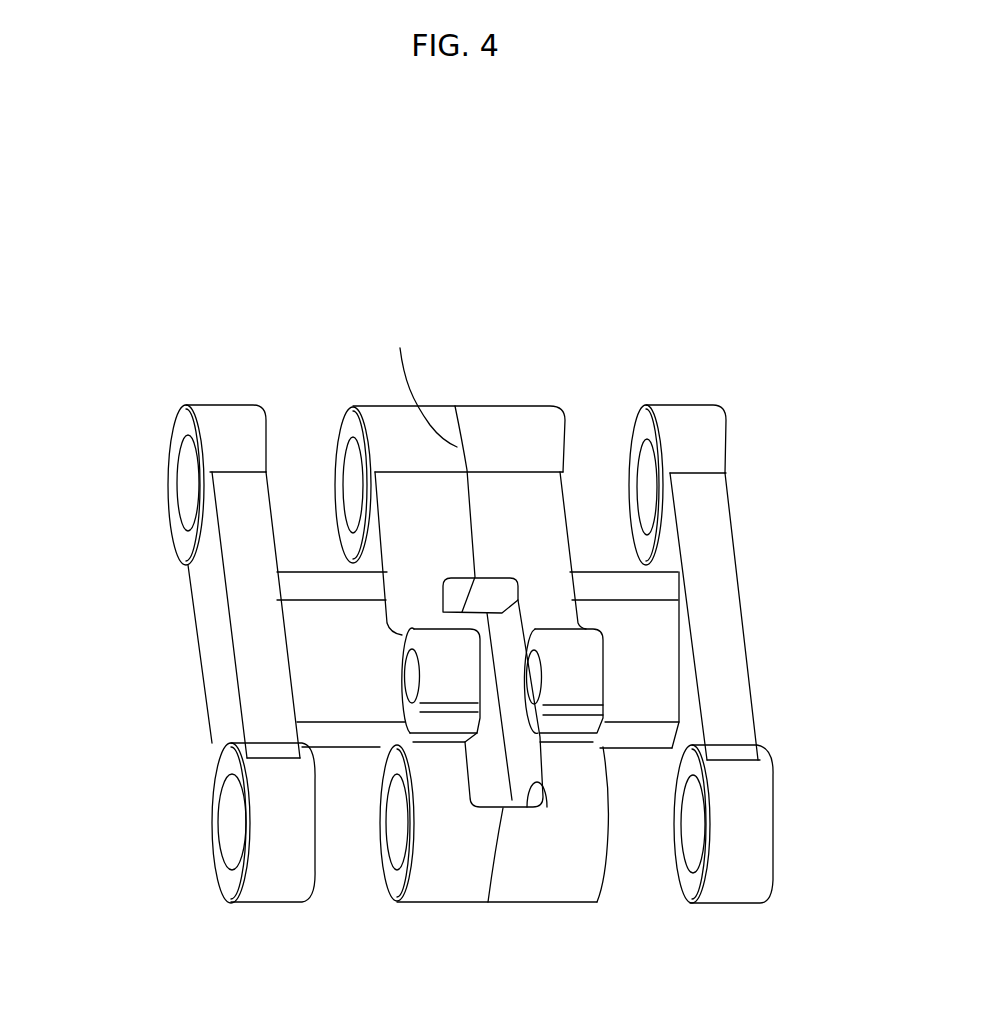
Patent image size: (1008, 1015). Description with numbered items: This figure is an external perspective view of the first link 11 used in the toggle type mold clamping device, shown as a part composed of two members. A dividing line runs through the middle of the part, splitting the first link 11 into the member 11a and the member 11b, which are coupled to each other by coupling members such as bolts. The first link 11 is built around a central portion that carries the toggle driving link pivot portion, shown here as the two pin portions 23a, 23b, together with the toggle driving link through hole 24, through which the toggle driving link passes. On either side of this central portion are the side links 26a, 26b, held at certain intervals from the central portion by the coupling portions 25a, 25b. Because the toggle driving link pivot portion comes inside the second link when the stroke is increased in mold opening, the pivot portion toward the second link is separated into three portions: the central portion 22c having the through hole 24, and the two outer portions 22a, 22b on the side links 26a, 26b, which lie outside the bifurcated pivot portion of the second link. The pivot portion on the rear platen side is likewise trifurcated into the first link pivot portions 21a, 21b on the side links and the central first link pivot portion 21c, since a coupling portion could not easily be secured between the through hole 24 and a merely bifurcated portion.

The first link 11 is at (345, 280).
The member 11a is at (773, 506).
The member 11b is at (132, 548).
The first link pivot portion 21a is at (700, 428).
The first link pivot portion 21b is at (220, 428).
The first link pivot portion 21c is at (505, 420).
The second link pivot portion 22a is at (730, 863).
The second link pivot portion 22b is at (265, 843).
The central portion 22c is at (443, 882).
The toggle driving link pivot portion 23a is at (587, 665).
The toggle driving link pivot portion 23b is at (445, 667).
The toggle driving link through hole 24 is at (485, 755).
The coupling portion 25a is at (623, 705).
The coupling portion 25b is at (327, 705).
The side link 26a is at (727, 695).
The side link 26b is at (222, 718).